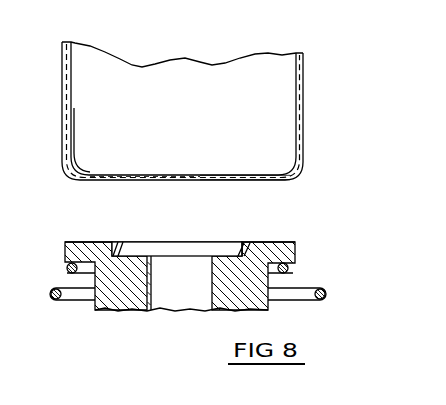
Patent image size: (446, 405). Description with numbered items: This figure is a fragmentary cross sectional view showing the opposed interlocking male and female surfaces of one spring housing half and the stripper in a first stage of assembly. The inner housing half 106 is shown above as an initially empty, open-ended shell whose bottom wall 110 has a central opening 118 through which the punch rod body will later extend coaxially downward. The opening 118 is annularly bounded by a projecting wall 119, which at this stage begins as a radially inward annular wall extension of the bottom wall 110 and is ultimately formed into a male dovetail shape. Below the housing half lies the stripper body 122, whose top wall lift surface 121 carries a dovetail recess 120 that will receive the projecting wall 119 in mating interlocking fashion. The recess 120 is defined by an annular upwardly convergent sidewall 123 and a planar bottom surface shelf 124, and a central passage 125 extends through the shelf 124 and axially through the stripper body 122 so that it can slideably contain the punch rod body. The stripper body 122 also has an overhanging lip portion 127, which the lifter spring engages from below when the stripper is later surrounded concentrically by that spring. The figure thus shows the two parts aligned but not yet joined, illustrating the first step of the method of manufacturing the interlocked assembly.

The inner housing half 106 is at (303, 142).
The bottom wall 110 is at (258, 176).
The central opening 118 is at (165, 177).
The projecting wall 119 is at (224, 179).
The dovetail recess 120 is at (150, 246).
The top wall lift surface 121 is at (272, 243).
The stripper body 122 is at (292, 267).
The upwardly convergent sidewall 123 is at (242, 254).
The planar bottom surface shelf 124 is at (221, 256).
The central passage 125 is at (152, 298).
The overhanging lip portion 127 is at (292, 287).